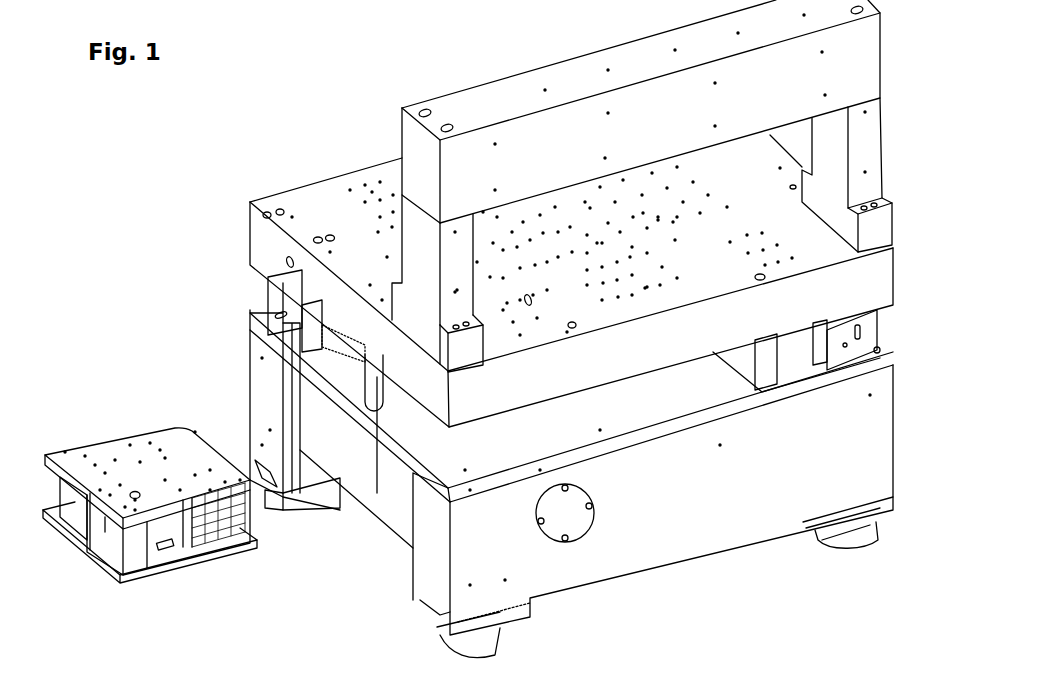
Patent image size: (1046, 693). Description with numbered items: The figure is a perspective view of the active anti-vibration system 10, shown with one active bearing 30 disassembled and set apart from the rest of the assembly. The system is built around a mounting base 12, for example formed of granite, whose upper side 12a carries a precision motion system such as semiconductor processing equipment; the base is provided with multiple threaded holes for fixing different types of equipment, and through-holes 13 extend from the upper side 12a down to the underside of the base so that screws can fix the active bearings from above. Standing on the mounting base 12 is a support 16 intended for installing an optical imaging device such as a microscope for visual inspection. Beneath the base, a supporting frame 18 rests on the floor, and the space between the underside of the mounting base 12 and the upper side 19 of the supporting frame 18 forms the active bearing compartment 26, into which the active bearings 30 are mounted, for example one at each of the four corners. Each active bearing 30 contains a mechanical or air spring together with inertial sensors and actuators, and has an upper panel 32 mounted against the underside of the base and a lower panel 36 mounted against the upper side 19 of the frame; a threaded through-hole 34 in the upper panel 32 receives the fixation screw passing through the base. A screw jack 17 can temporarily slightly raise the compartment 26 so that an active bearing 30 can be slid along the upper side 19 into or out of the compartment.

The active anti-vibration system 10 is at (333, 100).
The mounting base 12 is at (275, 241).
The upper side of the mounting base 12a is at (310, 195).
The through-hole 13 is at (572, 322).
The support 16 is at (855, 61).
The screw jack 17 is at (363, 392).
The supporting frame 18 is at (238, 395).
The upper side of the supporting frame 19 is at (450, 463).
The active bearing compartment 26 is at (398, 427).
The active bearing 30 is at (100, 405).
The upper panel 32 is at (136, 435).
The threaded through-hole 34 is at (254, 486).
The lower panel 36 is at (178, 555).